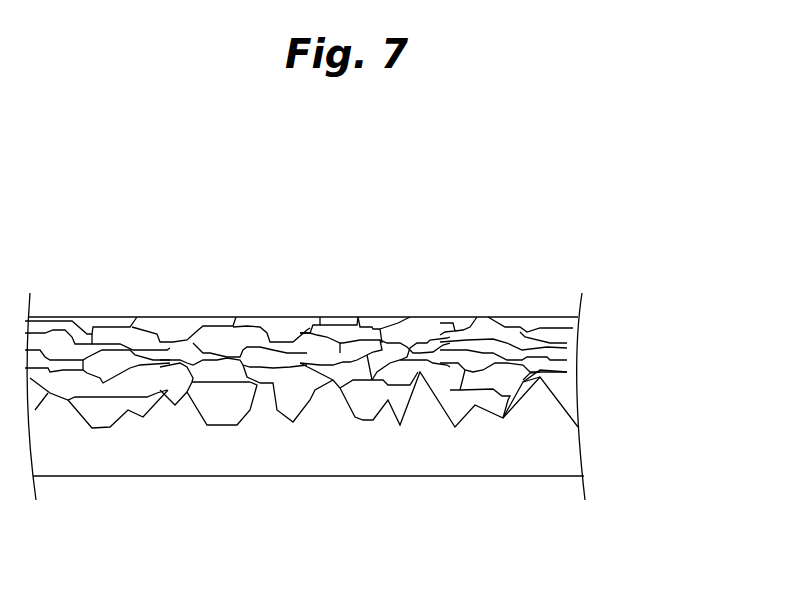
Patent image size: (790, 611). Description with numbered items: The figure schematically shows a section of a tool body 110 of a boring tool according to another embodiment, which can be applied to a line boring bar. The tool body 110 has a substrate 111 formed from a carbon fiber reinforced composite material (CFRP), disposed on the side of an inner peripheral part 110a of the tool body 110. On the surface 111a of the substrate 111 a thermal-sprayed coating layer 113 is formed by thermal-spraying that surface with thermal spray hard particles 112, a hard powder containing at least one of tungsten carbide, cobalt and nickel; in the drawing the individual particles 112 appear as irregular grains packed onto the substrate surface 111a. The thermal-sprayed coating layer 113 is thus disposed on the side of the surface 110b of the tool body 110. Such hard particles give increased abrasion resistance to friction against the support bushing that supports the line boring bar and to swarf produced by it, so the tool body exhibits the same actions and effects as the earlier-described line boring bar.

The tool body 110 is at (227, 248).
The inner peripheral part 110a is at (110, 477).
The surface 110b is at (100, 316).
The substrate 111 is at (590, 460).
The surface of the substrate 111a is at (560, 403).
The thermal spray hard particles 112 is at (573, 345).
The thermal-sprayed coating layer 113 is at (603, 363).